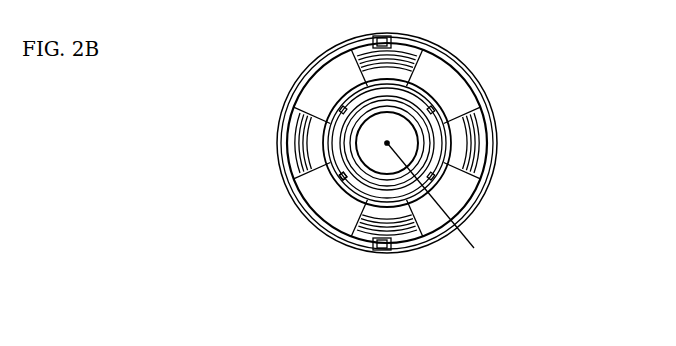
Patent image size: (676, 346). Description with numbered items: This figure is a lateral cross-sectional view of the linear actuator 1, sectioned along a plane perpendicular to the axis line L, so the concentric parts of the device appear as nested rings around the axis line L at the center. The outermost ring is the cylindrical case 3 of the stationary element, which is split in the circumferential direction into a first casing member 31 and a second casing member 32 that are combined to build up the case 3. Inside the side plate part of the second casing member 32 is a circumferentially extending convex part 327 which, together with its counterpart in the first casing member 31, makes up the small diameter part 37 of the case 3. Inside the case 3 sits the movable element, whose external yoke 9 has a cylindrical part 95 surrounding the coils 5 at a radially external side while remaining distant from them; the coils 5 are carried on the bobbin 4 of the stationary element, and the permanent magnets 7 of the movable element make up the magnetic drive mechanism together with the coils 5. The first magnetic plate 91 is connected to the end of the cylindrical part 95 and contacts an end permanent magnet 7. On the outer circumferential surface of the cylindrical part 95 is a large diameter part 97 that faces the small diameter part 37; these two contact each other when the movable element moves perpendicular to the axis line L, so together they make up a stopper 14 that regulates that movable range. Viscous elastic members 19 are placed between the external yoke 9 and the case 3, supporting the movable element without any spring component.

The linear actuator 1 is at (520, 74).
The case 3 is at (370, 180).
The bobbin 4 is at (370, 108).
The coils 5 is at (356, 106).
The permanent magnets 7 is at (390, 112).
The external yoke 9 is at (467, 139).
The stopper 14 is at (291, 131).
The viscous elastic member 19 is at (325, 93).
The first casing member 31 is at (330, 242).
The second casing member 32 is at (392, 267).
The small diameter part 37 is at (302, 143).
The first magnetic plate 91 is at (332, 214).
The cylindrical part 95 is at (462, 113).
The large diameter part 97 is at (301, 134).
The convex part 327 is at (302, 143).
The axis line L is at (437, 200).